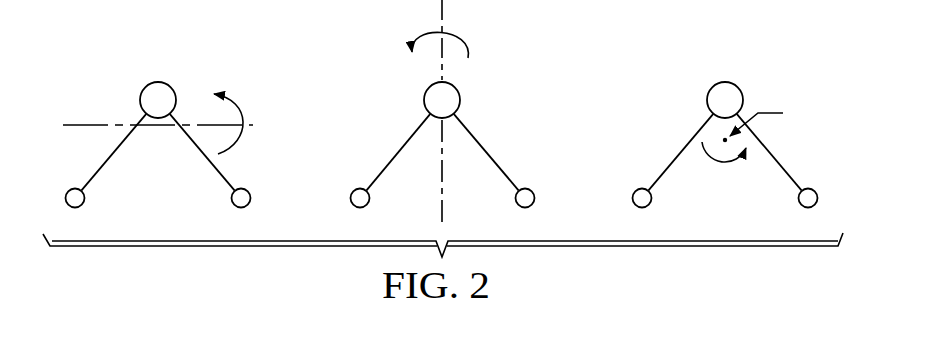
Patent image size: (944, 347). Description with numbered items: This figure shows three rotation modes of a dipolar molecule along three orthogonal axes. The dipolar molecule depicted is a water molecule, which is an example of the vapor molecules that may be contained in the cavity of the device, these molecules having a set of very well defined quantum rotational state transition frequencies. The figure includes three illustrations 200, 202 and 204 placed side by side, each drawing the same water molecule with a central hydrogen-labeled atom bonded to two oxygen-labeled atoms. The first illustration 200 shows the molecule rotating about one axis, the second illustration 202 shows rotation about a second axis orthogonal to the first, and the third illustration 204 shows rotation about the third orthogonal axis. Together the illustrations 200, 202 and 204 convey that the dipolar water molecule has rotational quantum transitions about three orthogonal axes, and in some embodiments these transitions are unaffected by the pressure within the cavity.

The illustration of first rotational mode 200 is at (106, 74).
The illustration of second rotational mode 202 is at (391, 74).
The illustration of third rotational mode 204 is at (676, 74).